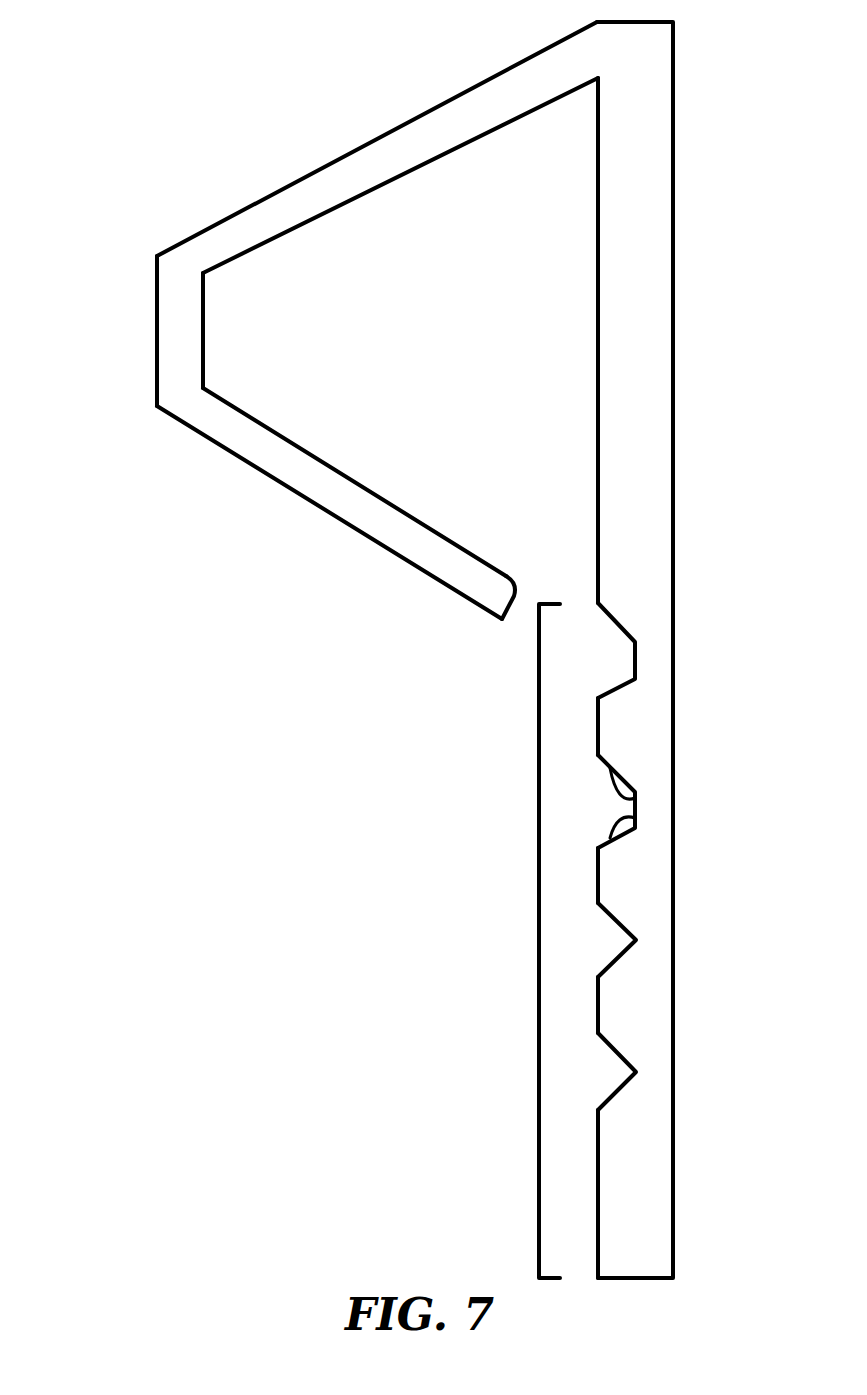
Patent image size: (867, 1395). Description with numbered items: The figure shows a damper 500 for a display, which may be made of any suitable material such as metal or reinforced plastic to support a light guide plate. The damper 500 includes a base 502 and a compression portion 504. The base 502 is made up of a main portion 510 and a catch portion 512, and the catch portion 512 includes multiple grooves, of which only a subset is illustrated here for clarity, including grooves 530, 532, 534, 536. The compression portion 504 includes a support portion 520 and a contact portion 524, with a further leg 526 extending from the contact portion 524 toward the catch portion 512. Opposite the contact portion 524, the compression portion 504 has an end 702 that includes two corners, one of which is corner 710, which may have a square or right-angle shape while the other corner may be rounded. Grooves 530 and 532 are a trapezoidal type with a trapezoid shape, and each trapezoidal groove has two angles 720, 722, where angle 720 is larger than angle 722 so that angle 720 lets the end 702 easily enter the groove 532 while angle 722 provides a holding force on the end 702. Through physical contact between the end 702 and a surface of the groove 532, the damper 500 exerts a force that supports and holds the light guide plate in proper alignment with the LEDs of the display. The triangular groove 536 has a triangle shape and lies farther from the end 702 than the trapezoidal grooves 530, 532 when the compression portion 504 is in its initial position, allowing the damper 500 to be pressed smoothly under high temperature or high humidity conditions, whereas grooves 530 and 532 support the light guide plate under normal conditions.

The damper 500 is at (410, 650).
The base 502 is at (631, 650).
The compression portion 504 is at (312, 359).
The main portion 510 is at (660, 349).
The catch portion 512 is at (539, 940).
The support portion 520 is at (330, 163).
The contact portion 524 is at (185, 291).
The second leg 526 is at (333, 490).
The groove 530 is at (662, 660).
The groove 532 is at (667, 801).
The groove 534 is at (662, 940).
The groove 536 is at (662, 1072).
The end 702 is at (481, 617).
The corner 710 is at (505, 625).
The angle 720 is at (614, 782).
The angle 722 is at (612, 824).